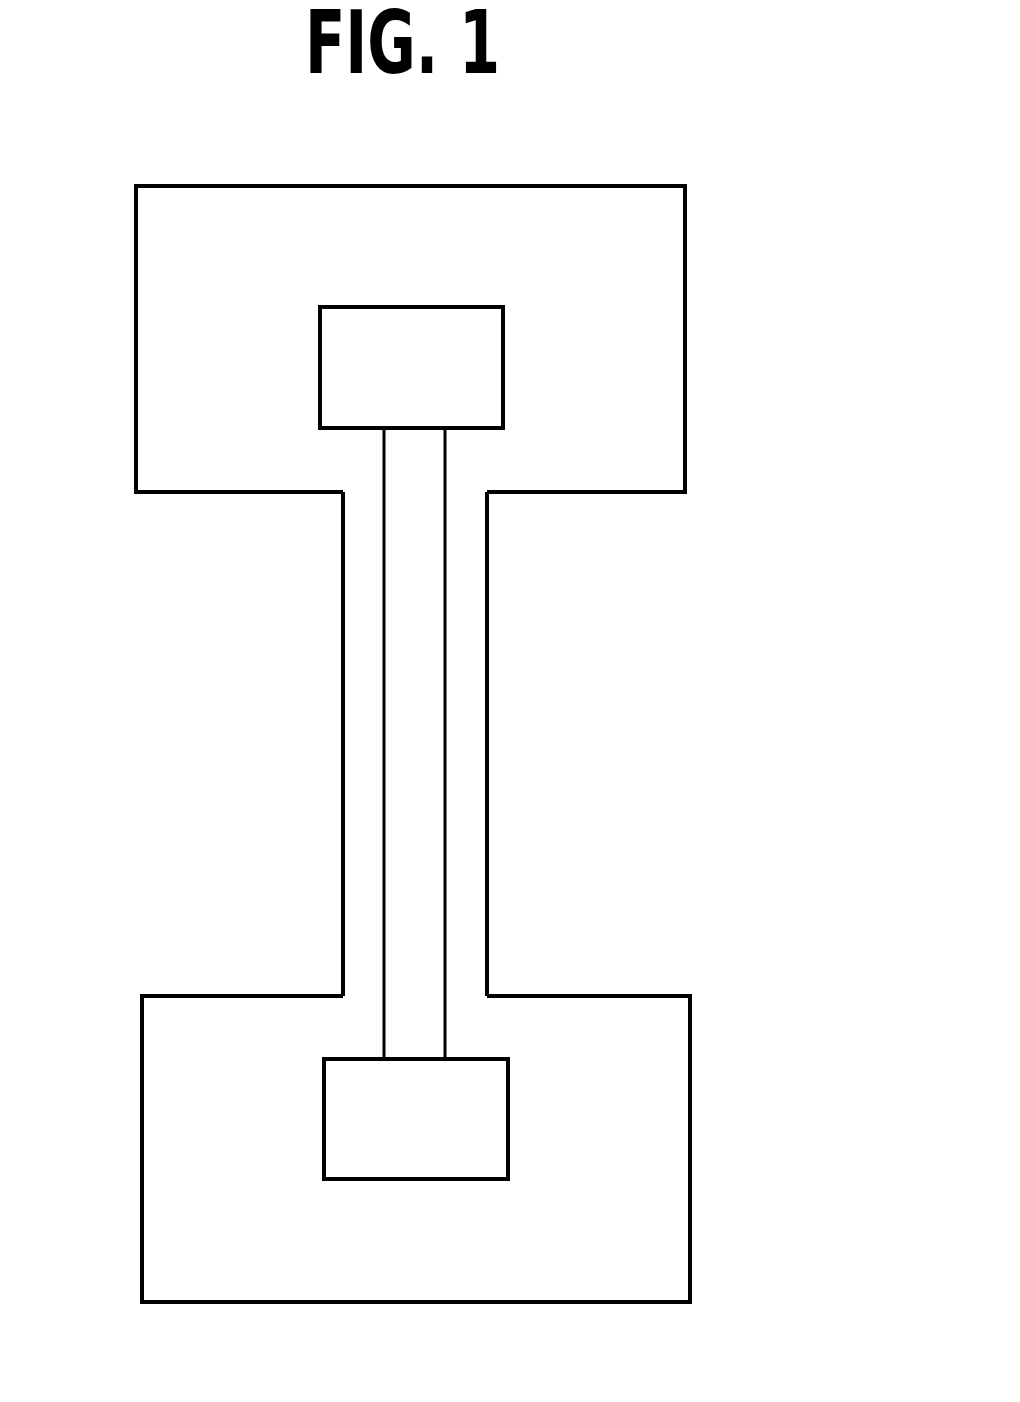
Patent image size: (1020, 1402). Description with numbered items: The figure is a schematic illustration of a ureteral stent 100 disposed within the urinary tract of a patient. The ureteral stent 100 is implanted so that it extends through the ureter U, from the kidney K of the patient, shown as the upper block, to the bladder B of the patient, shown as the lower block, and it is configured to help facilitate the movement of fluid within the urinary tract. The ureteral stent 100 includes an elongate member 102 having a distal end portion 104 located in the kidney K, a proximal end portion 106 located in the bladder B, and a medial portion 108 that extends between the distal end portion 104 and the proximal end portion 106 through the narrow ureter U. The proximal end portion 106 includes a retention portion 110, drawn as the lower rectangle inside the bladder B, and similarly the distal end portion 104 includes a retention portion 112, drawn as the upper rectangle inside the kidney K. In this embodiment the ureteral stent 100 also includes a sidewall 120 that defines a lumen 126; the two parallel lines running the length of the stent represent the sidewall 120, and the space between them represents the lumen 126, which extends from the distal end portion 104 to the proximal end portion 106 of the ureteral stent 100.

The kidney K is at (685, 220).
The bladder B is at (691, 1080).
The ureter U is at (487, 743).
The ureteral stent 100 is at (466, 872).
The elongate member 102 is at (465, 552).
The distal end portion 104 is at (525, 410).
The proximal end portion 106 is at (620, 1060).
The medial portion 108 is at (445, 630).
The retention portion 110 is at (508, 1155).
The retention portion 112 is at (503, 348).
The sidewall 120 is at (383, 503).
The lumen 126 is at (410, 588).